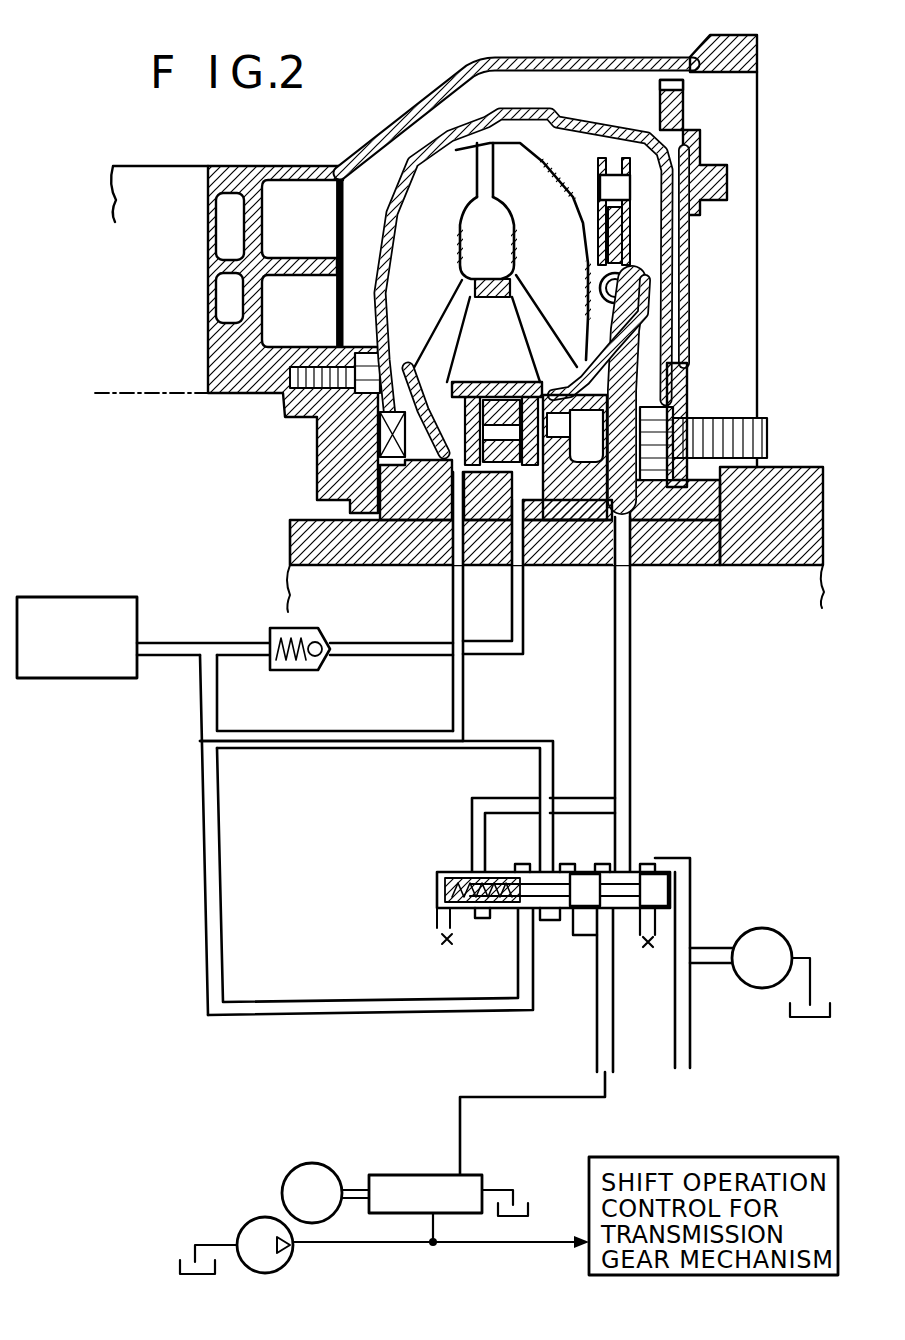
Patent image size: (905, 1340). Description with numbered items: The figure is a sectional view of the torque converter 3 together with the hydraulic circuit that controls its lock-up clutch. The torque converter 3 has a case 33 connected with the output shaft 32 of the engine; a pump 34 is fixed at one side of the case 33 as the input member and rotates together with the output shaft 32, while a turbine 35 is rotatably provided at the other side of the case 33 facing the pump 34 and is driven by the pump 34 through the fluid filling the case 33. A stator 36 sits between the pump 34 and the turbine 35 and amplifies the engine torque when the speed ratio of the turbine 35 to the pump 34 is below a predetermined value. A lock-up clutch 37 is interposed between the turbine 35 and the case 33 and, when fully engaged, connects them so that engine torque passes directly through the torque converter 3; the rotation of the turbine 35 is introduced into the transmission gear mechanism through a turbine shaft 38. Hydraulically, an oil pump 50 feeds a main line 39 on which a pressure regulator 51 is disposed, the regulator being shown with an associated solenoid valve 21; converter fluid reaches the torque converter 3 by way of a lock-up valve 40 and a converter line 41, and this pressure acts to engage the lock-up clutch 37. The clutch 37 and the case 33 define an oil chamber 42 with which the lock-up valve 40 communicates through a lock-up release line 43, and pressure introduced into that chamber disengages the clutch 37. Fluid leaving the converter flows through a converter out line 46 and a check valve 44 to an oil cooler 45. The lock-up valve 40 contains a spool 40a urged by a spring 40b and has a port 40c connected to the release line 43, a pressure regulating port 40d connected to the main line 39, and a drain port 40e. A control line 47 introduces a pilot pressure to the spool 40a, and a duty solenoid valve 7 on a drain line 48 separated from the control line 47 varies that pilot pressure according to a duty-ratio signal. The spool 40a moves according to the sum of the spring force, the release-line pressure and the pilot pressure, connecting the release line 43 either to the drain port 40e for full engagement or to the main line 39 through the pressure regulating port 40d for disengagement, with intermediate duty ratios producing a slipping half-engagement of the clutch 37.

The torque converter 3 is at (585, 98).
The output shaft 32 is at (798, 475).
The case 33 is at (492, 195).
The pump 34 is at (436, 175).
The turbine 35 is at (520, 160).
The stator 36 is at (490, 313).
The lock-up clutch 37 is at (648, 272).
The turbine shaft 38 is at (412, 553).
The main line 39 is at (598, 1044).
The lock-up valve 40 is at (580, 903).
The spool 40a is at (657, 880).
The spring 40b is at (470, 868).
The port 40c is at (620, 852).
The pressure regulating port 40d is at (600, 925).
The drain port 40e is at (656, 920).
The converter line 41 is at (468, 696).
The clutch release cylinder 42 is at (641, 344).
The lock-up release line 43 is at (631, 676).
The check valve 44 is at (296, 670).
The oil cooler 45 is at (134, 597).
The oil passage 46 is at (522, 604).
The control line 47 is at (692, 1046).
The drain line 48 is at (717, 948).
The duty solenoid valve 7 is at (778, 930).
The solenoid valve 21 is at (326, 1150).
The oil pump 50 is at (244, 1228).
The pressure regulator 51 is at (425, 1175).